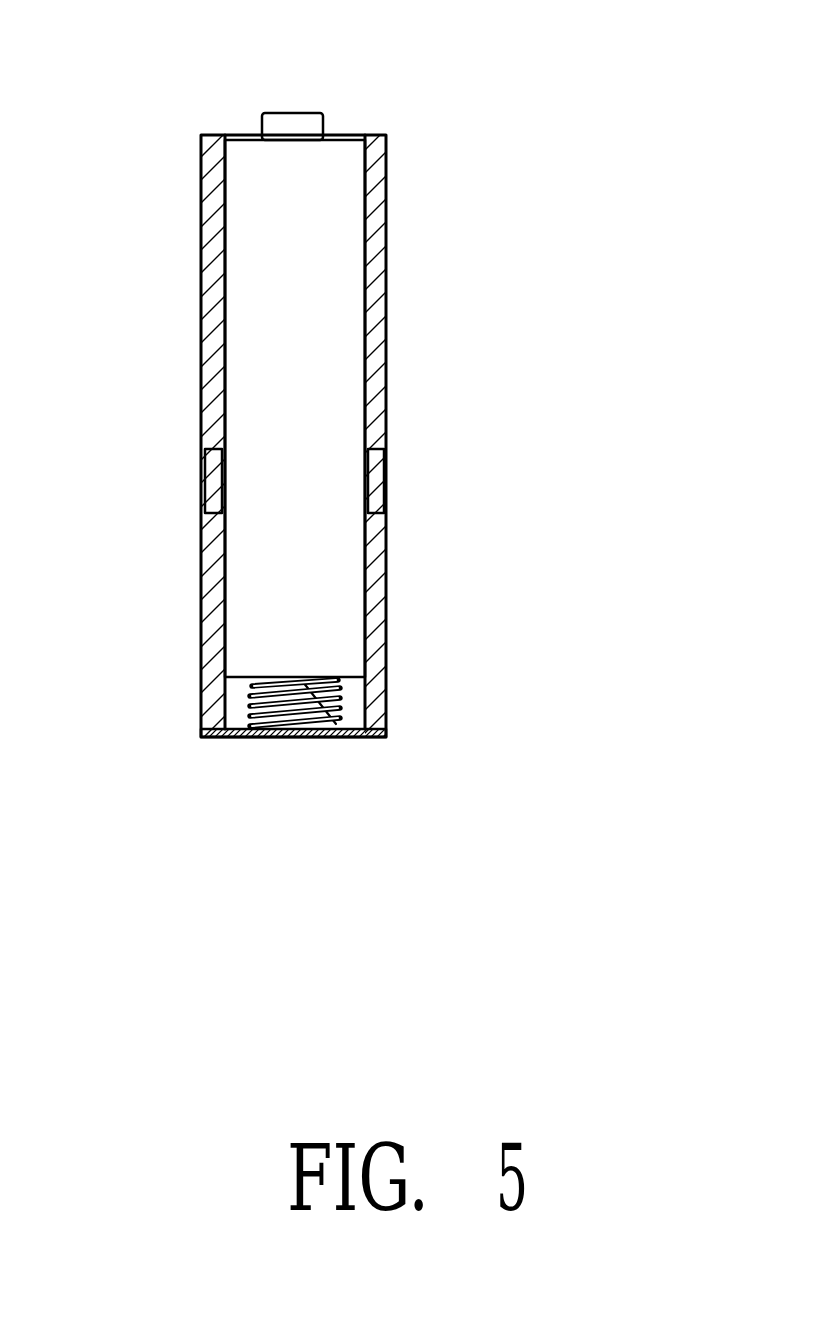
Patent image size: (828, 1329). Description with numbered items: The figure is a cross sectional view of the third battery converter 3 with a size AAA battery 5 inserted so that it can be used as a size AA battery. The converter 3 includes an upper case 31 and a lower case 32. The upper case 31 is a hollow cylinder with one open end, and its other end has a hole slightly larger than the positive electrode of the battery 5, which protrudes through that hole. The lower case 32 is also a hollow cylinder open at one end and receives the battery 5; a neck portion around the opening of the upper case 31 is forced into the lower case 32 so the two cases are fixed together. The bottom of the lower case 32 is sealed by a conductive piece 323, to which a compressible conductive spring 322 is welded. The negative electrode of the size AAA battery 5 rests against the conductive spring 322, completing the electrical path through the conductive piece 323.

The third battery converter 3 is at (444, 215).
The upper case 31 is at (596, 272).
The lower case 32 is at (578, 593).
The conductive spring 322 is at (448, 842).
The conductive piece 323 is at (162, 840).
The size AAA battery 5 is at (627, 382).